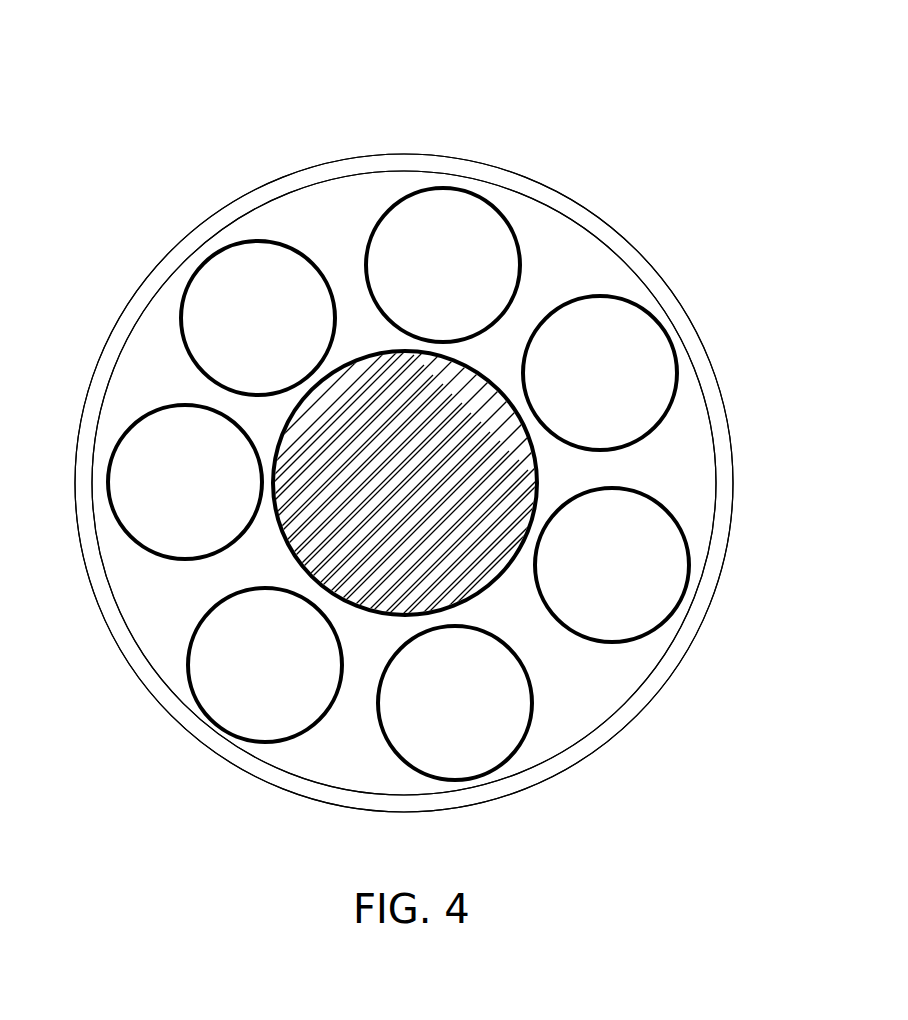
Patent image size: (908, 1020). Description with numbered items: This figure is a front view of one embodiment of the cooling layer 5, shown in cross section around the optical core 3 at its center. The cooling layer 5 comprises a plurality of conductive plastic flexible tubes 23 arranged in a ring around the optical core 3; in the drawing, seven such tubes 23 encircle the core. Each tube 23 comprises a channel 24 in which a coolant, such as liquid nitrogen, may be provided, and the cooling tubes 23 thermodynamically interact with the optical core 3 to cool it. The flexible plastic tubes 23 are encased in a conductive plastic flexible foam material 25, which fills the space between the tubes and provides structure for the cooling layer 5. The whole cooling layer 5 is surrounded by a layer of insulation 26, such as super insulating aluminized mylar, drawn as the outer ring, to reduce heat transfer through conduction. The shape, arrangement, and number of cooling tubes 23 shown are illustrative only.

The cooling layer 5 is at (627, 154).
The layer of insulation 26 is at (352, 157).
The conductive plastic flexible tubes 23 is at (655, 425).
The conductive plastic flexible foam material 25 is at (592, 693).
The optical core 3 is at (290, 550).
The channel 24 is at (627, 363).